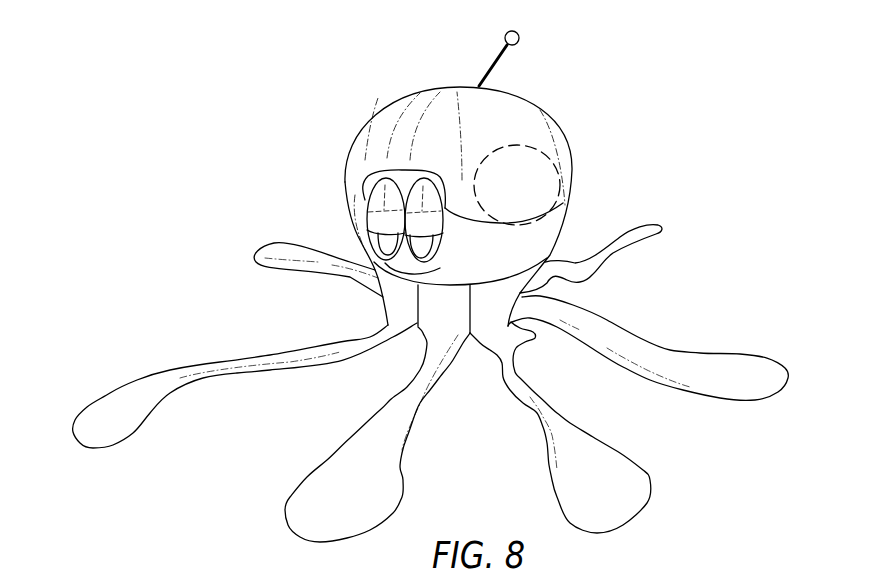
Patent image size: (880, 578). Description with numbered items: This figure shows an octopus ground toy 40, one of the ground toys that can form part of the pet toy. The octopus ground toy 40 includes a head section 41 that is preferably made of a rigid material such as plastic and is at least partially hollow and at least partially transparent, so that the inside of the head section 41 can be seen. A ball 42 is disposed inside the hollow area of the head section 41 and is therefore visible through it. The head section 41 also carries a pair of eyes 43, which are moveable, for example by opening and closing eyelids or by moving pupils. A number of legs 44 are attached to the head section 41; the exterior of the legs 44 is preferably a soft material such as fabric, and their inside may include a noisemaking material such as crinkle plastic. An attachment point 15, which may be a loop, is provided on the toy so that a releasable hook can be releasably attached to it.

The attachment point 15 is at (519, 39).
The octopus ground toy 40 is at (595, 106).
The head section 41 is at (371, 118).
The ball 42 is at (565, 197).
The eyes 43 is at (371, 223).
The legs 44 is at (270, 243).